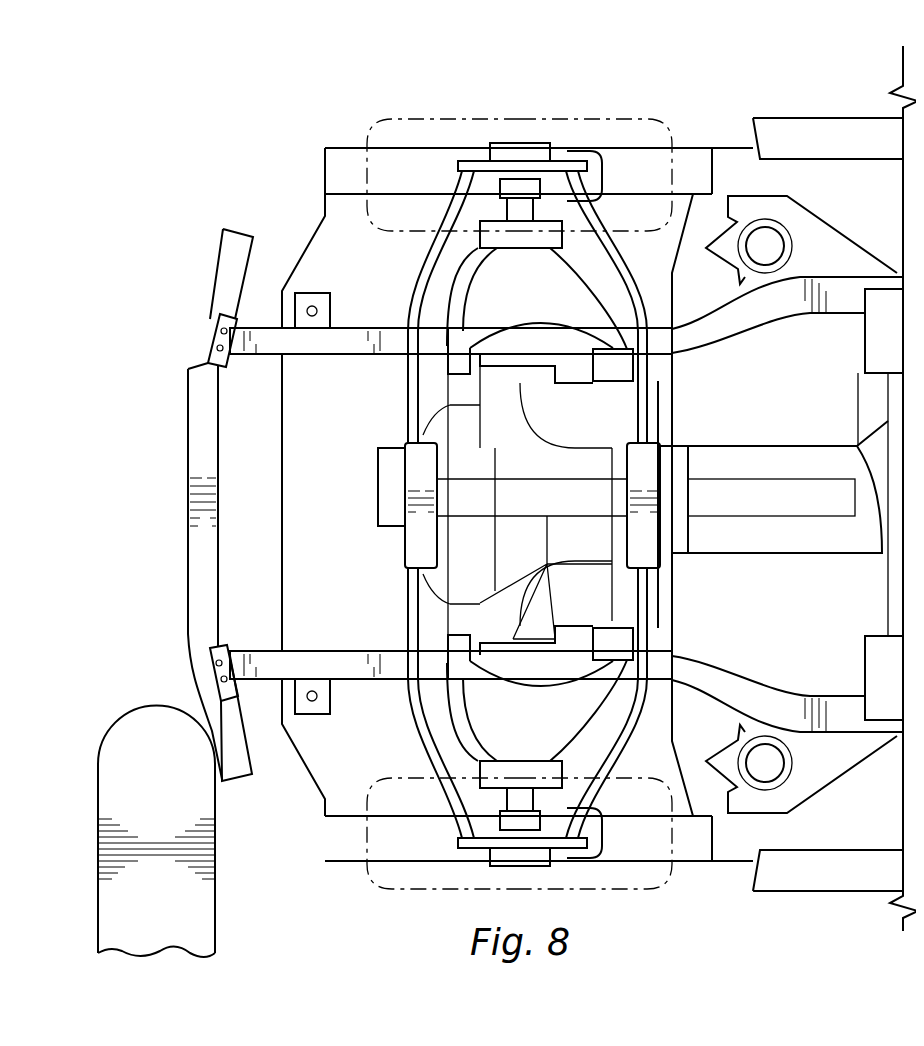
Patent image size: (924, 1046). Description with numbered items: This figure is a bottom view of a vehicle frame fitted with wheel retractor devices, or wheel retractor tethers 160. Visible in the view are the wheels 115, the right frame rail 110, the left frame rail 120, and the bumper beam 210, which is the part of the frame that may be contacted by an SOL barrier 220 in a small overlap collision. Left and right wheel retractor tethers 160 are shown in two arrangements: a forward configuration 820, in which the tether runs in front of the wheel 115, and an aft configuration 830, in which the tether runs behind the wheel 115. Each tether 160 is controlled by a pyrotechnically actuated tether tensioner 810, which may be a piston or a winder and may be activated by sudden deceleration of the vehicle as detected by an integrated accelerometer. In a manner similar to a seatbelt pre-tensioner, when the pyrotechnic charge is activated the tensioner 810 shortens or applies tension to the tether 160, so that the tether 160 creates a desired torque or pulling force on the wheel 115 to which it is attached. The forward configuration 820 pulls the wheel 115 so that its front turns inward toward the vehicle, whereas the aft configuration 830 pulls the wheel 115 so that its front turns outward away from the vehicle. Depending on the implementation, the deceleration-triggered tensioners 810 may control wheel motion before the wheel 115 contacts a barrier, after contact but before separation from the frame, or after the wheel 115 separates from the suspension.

The right frame rail 110 is at (306, 660).
The wheel 115 is at (530, 118).
The left frame rail 120 is at (336, 345).
The wheel retractor tether 160 is at (410, 302).
The bumper beam 210 is at (205, 278).
The SOL barrier 220 is at (103, 779).
The tether tensioner 810 is at (662, 468).
The forward configuration 820 is at (410, 106).
The aft configuration 830 is at (624, 106).